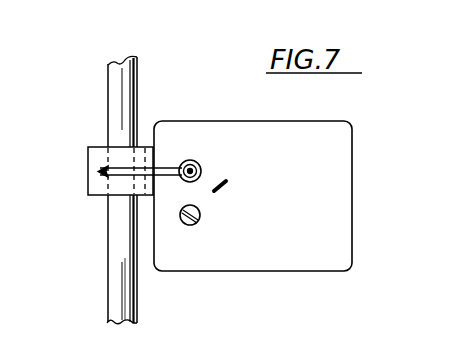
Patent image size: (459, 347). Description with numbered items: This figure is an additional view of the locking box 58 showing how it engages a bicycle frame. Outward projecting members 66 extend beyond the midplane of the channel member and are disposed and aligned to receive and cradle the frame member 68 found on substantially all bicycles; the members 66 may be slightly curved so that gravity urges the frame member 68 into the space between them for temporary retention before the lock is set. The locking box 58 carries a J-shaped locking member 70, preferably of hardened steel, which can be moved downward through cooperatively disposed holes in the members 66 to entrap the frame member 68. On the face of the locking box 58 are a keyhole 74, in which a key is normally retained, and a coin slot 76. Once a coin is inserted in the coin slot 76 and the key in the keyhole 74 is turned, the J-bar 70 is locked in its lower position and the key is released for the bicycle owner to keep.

The locking box 58 is at (349, 145).
The outward projecting member 66 is at (97, 158).
The frame member 68 is at (115, 80).
The J-shaped locking member 70 is at (101, 169).
The keyhole 74 is at (190, 226).
The coin slot 76 is at (225, 186).